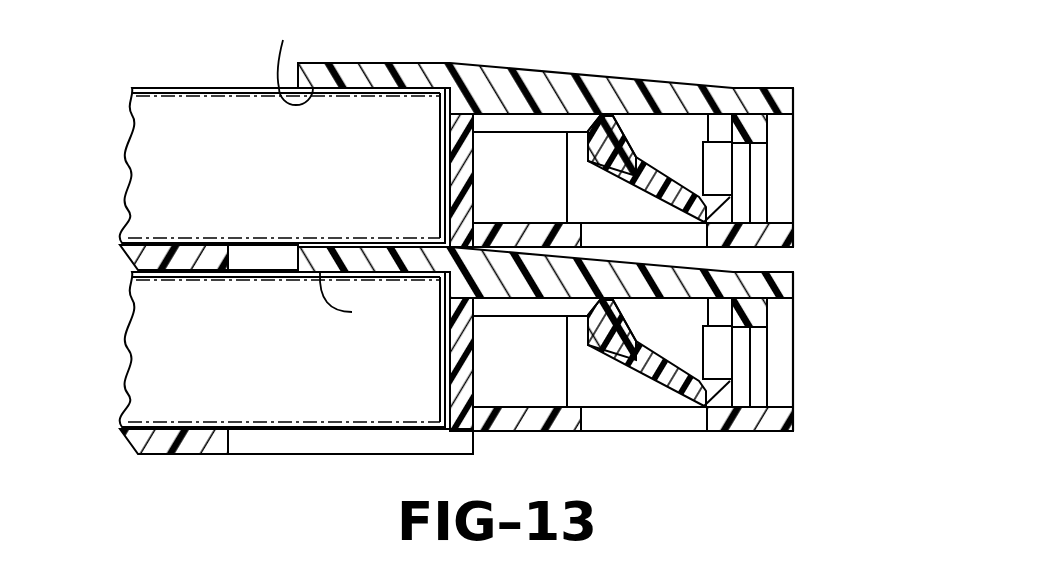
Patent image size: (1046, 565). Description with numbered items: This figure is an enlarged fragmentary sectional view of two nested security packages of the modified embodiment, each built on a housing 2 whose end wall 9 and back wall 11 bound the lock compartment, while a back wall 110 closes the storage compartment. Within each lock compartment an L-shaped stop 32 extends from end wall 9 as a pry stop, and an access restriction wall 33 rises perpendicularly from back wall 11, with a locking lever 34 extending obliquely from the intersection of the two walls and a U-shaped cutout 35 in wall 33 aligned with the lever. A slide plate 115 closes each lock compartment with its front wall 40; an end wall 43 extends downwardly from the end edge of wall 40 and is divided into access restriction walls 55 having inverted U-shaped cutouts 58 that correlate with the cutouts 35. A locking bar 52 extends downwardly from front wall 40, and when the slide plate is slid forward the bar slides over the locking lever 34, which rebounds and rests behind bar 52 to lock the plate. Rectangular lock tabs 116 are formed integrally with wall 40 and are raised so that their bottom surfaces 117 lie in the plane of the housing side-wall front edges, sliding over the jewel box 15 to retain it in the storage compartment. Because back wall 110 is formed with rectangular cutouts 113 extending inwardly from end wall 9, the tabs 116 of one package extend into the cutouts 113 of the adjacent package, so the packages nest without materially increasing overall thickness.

The housing 2 is at (140, 150).
The end wall 9 is at (458, 180).
The back wall 11 is at (540, 222).
The jewel box 15 is at (197, 92).
The L-shaped stop 32 is at (517, 153).
The access restriction wall 33 is at (732, 212).
The locking lever 34 is at (620, 150).
The cutout 35 is at (717, 168).
The front wall 40 is at (722, 90).
The end wall 43 is at (770, 132).
The locking bar 52 is at (586, 117).
The access restriction wall 55 is at (768, 185).
The cutout 58 is at (758, 160).
The back wall 110 is at (197, 252).
The rectangular shaped cutout 113 is at (267, 262).
The slide plate 115 is at (797, 92).
The lock tab 116 is at (375, 62).
The bottom surface 117 is at (332, 170).